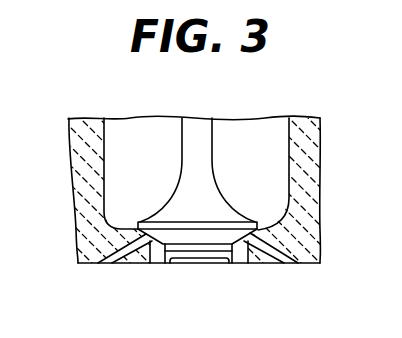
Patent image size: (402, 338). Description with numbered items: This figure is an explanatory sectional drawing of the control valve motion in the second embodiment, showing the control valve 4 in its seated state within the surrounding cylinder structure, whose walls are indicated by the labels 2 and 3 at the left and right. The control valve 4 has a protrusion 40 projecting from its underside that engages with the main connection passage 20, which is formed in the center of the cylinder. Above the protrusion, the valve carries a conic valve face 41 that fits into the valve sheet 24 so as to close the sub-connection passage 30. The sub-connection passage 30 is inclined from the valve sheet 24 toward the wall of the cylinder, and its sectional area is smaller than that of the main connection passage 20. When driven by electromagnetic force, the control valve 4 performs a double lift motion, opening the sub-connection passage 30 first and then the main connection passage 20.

The cylinder head body 2 is at (110, 180).
The valve seat insert 3 is at (307, 160).
The control valve 4 is at (203, 130).
The conic valve face 41 is at (260, 228).
The main connection passage 20 is at (170, 263).
The valve sheet 24 is at (148, 263).
The sub-connection passage 30 is at (108, 263).
The protrusion 40 is at (198, 263).